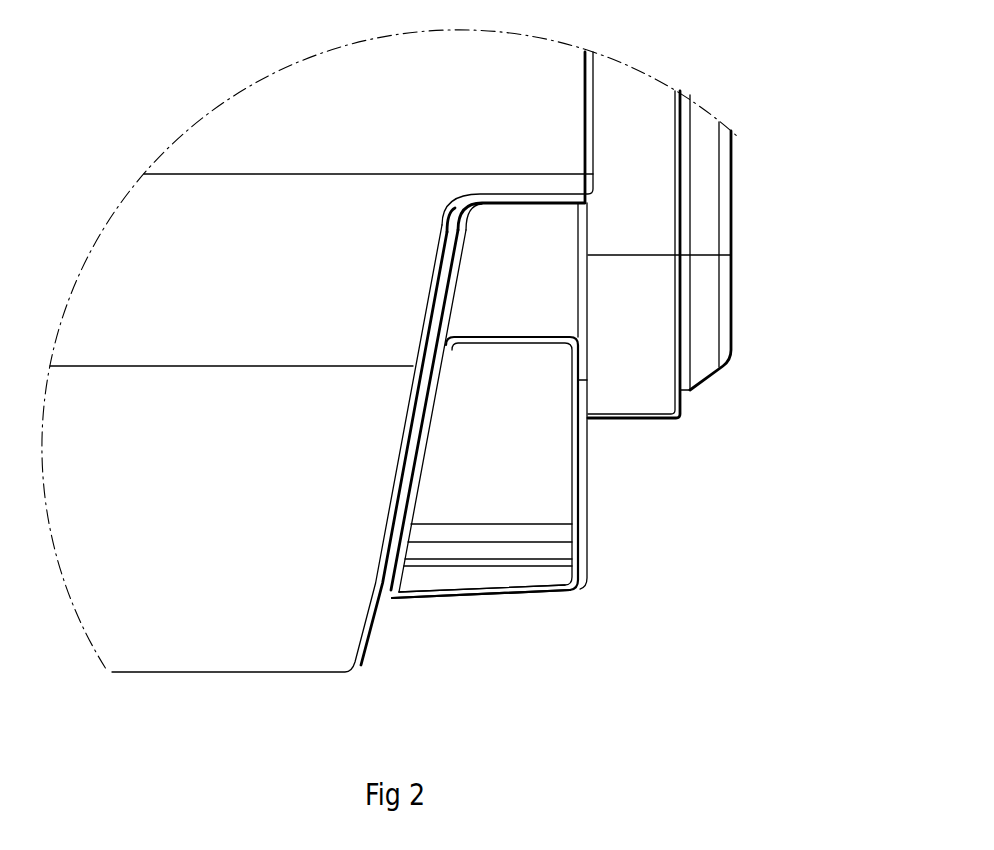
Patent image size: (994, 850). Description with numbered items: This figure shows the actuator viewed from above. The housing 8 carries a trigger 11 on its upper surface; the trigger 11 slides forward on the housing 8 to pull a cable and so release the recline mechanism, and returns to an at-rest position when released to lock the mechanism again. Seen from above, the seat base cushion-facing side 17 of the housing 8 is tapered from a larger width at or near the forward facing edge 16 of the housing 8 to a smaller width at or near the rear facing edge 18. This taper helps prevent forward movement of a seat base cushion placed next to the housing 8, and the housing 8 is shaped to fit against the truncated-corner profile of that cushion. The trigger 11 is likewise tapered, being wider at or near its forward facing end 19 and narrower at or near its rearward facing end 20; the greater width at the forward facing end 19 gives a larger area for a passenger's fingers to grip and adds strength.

The housing 8 is at (543, 253).
The trigger 11 is at (540, 430).
The forward facing edge 16 is at (582, 593).
The seat base cushion-facing side 17 is at (404, 523).
The rear facing edge 18 is at (523, 205).
The forward facing end 19 is at (547, 597).
The rearward facing end 20 is at (537, 337).